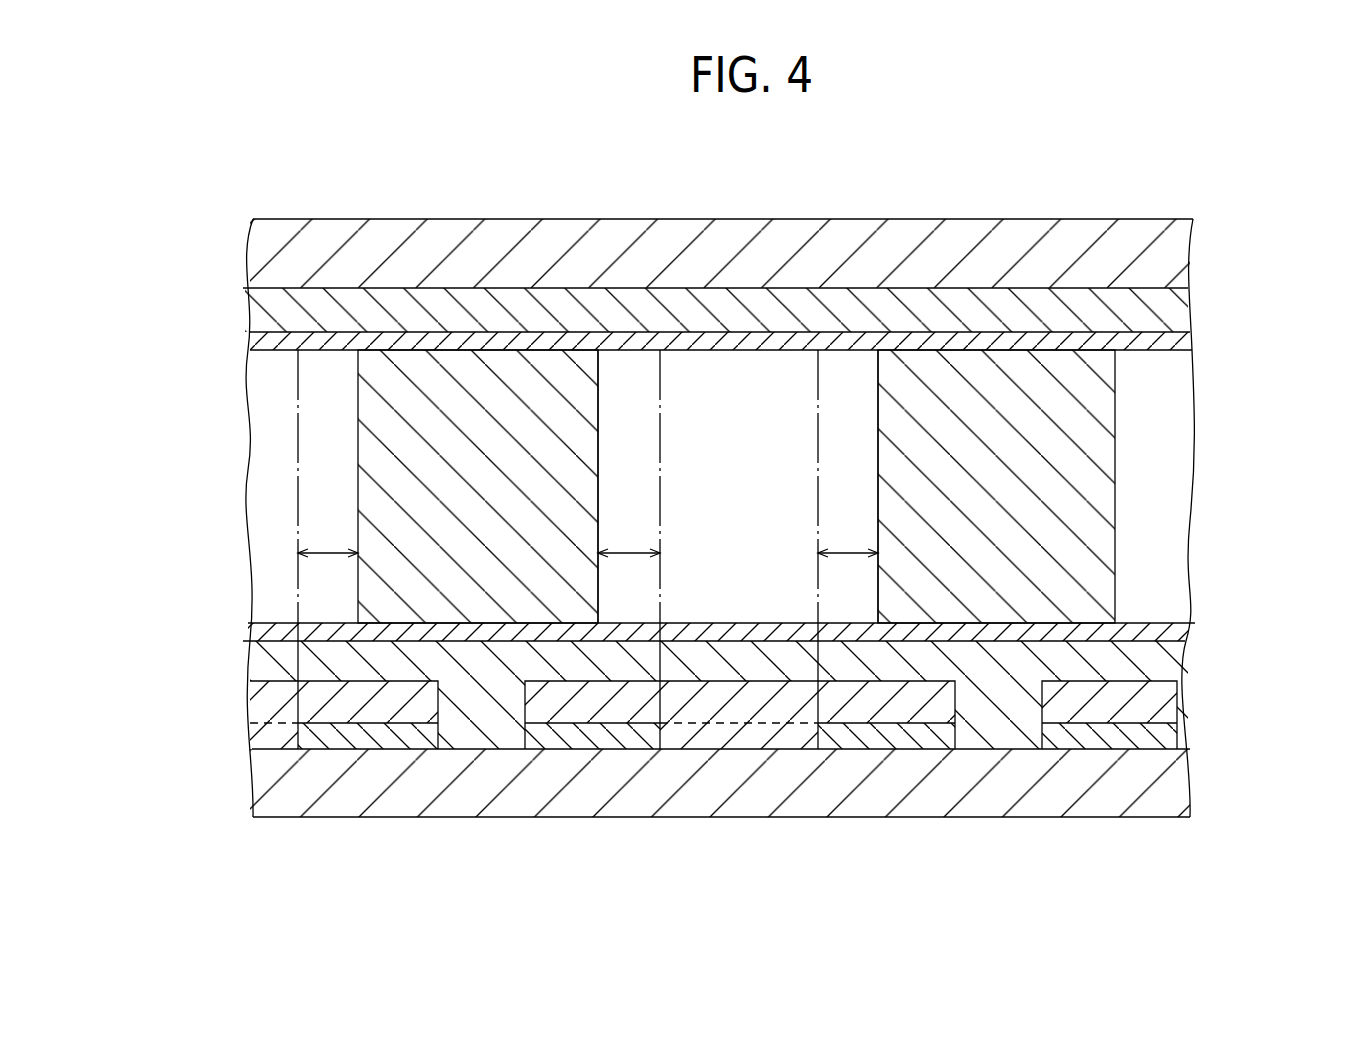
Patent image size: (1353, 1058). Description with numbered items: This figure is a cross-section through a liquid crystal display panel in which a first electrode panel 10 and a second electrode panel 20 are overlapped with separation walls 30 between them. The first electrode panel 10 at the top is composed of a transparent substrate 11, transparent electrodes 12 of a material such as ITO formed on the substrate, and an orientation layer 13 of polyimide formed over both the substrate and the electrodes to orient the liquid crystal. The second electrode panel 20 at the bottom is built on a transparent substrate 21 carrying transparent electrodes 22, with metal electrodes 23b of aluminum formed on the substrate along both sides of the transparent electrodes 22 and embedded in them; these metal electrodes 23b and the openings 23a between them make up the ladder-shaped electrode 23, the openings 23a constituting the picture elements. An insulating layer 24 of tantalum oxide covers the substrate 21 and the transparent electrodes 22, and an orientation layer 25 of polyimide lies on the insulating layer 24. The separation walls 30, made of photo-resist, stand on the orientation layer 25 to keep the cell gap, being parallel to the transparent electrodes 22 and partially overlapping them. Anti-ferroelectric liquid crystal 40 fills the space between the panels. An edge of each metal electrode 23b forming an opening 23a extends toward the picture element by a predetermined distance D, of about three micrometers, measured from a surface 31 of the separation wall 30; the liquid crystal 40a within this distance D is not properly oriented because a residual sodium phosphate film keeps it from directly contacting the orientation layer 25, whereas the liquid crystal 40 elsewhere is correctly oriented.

The first electrode panel 10 is at (1040, 192).
The transparent substrate 11 is at (1172, 260).
The transparent electrodes 12 is at (1168, 310).
The orientation layer 13 is at (1170, 337).
The second electrode panel 20 is at (567, 832).
The transparent substrate 21 is at (1173, 785).
The transparent electrodes 22 is at (1172, 703).
The ladder-shaped electrode 23 is at (1166, 734).
The openings 23a is at (672, 740).
The metal electrodes 23b is at (882, 739).
The insulating layer 24 is at (1177, 662).
The orientation layer 25 is at (1180, 628).
The separation walls 30 is at (393, 438).
The surface of the separation wall 31 is at (605, 386).
The anti-ferroelectric liquid crystal 40 is at (736, 386).
The anti-ferroelectric liquid crystal 40a is at (632, 380).